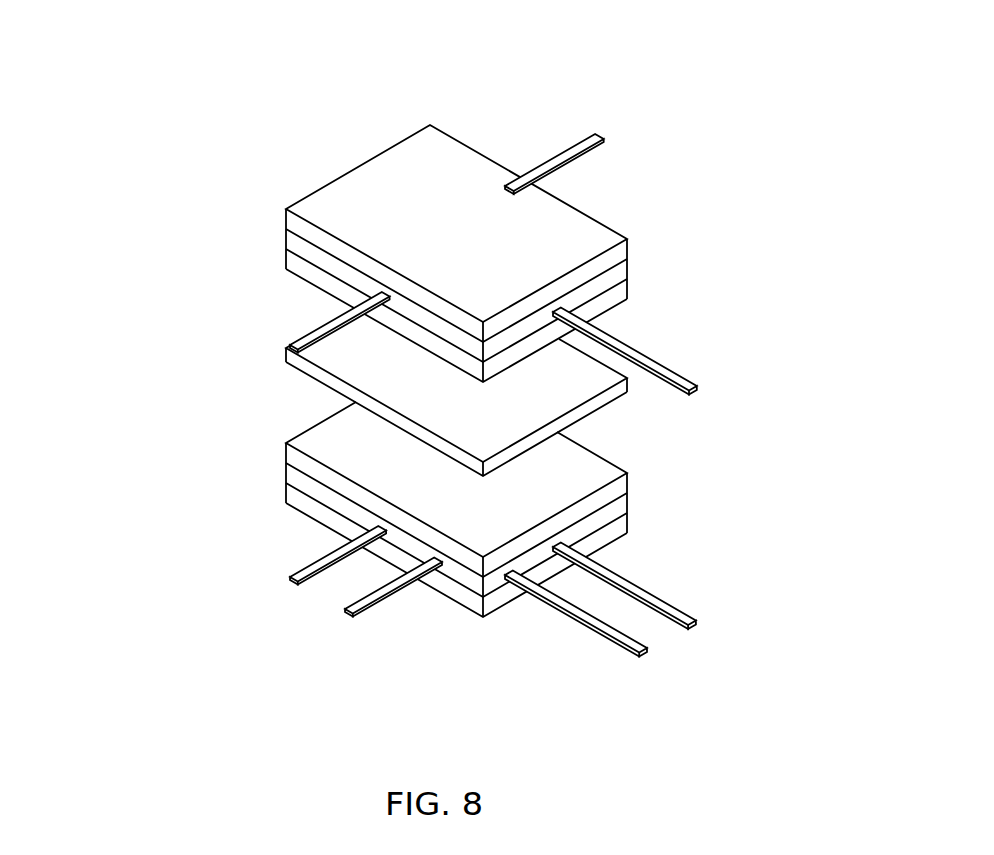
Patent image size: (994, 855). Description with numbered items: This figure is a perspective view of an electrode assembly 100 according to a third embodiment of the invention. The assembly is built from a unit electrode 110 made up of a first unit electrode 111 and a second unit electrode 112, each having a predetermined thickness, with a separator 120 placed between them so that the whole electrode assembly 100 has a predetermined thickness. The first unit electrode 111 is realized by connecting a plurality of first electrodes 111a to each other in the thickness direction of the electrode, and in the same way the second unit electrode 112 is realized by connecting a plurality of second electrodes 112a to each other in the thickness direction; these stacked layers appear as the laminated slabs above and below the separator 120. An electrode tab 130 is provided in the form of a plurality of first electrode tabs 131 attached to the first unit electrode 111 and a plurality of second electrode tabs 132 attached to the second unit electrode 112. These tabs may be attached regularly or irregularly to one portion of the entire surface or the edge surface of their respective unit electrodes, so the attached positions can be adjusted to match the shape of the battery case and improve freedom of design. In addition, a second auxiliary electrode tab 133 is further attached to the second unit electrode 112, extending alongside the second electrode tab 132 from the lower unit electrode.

The electrode assembly 100 is at (467, 78).
The unit electrode 110 is at (112, 243).
The first unit electrode 111 is at (165, 203).
The first electrode 111a is at (285, 223).
The second unit electrode 112 is at (165, 452).
The second electrode 112a is at (285, 457).
The separator 120 is at (285, 355).
The electrode tab 130 is at (760, 463).
The first electrode tab 131 is at (693, 392).
The second electrode tab 132 is at (687, 614).
The second auxiliary electrode tab 133 is at (648, 650).